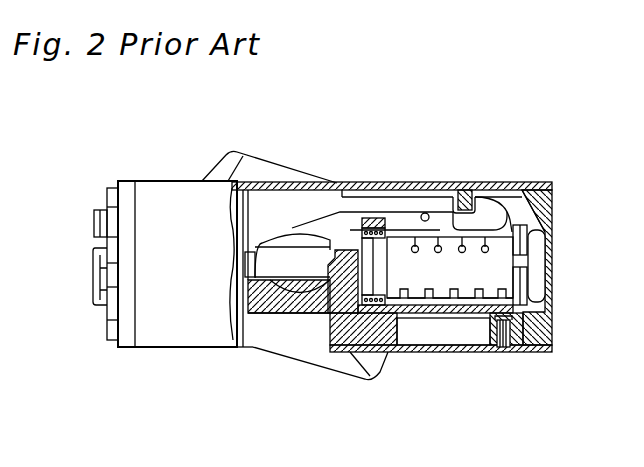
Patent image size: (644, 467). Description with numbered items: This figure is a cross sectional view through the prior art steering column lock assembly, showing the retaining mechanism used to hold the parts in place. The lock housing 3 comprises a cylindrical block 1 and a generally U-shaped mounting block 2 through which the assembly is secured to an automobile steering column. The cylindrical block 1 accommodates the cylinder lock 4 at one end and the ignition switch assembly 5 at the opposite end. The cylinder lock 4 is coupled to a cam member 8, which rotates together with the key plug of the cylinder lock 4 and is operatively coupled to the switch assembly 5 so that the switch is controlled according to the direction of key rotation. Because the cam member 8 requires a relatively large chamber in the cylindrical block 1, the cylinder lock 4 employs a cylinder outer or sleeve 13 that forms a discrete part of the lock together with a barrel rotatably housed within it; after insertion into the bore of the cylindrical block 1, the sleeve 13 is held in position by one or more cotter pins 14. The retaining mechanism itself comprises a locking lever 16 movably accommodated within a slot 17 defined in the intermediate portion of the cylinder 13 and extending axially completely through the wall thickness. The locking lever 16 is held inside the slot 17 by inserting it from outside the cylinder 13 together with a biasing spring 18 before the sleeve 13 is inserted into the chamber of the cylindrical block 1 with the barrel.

The cylindrical block 1 is at (410, 185).
The U-shaped mounting block 2 is at (303, 363).
The lock housing 3 is at (437, 357).
The cylinder lock 4 is at (490, 273).
The ignition switch assembly 5 is at (190, 318).
The cam member 8 is at (348, 335).
The cylinder outer or sleeve 13 is at (537, 352).
The cotter pin 14 is at (503, 350).
The locking lever 16 is at (372, 207).
The slot 17 is at (512, 200).
The biasing spring 18 is at (487, 190).